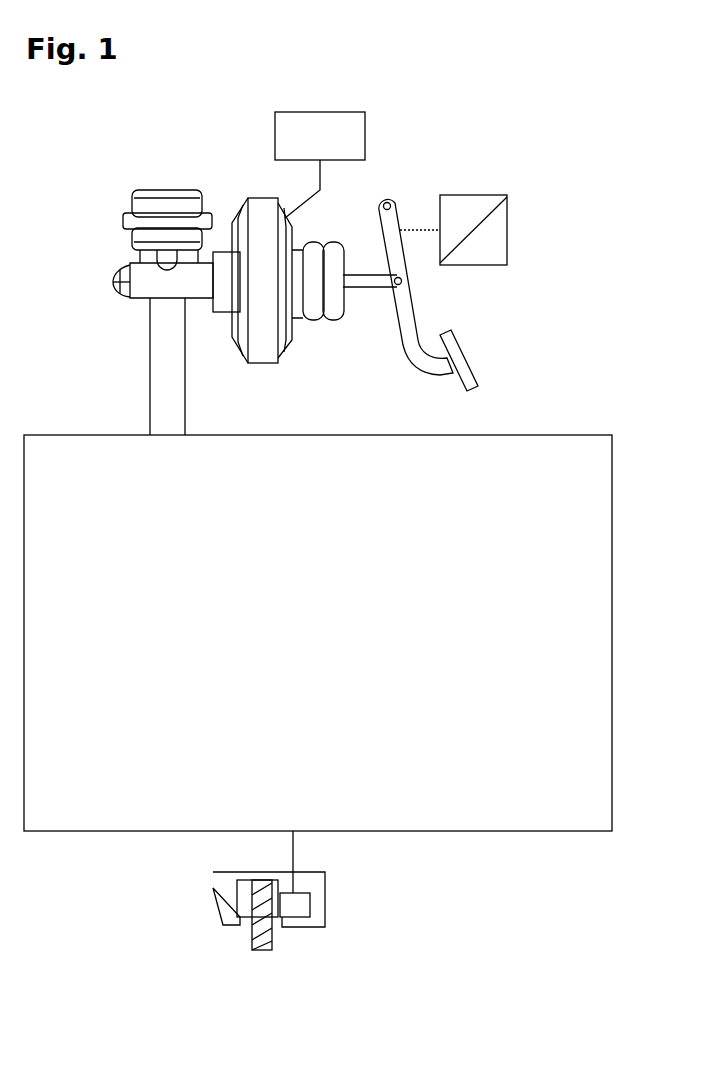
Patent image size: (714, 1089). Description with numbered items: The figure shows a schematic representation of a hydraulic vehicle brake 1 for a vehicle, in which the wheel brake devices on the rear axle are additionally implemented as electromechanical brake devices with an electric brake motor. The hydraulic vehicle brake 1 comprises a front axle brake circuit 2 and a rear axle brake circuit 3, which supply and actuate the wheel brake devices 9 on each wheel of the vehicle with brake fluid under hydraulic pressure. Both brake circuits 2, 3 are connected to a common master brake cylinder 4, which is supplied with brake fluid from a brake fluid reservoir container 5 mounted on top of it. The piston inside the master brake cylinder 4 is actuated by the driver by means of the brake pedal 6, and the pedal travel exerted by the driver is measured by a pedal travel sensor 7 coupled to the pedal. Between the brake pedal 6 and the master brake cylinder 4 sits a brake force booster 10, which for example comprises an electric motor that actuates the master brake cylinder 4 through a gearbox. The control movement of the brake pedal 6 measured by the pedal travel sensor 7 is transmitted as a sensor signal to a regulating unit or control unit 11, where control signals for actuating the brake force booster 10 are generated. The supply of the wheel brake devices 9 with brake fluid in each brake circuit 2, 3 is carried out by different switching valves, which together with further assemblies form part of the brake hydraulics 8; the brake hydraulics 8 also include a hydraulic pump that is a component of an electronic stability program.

The hydraulic vehicle brake 1 is at (475, 133).
The front axle brake circuit 2 is at (150, 397).
The rear axle brake circuit 3 is at (185, 397).
The master brake cylinder 4 is at (117, 282).
The brake fluid reservoir container 5 is at (132, 200).
The brake pedal 6 is at (463, 353).
The pedal travel sensor 7 is at (507, 230).
The brake hydraulics 8 is at (612, 628).
The wheel brake device 9 is at (288, 943).
The brake force booster 10 is at (292, 350).
The control unit 11 is at (275, 134).